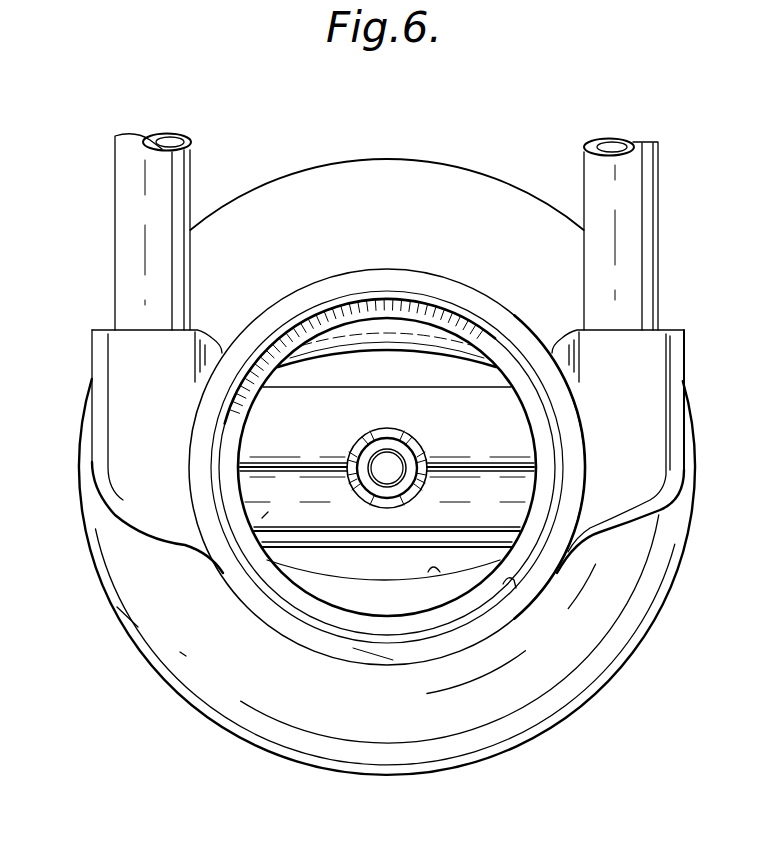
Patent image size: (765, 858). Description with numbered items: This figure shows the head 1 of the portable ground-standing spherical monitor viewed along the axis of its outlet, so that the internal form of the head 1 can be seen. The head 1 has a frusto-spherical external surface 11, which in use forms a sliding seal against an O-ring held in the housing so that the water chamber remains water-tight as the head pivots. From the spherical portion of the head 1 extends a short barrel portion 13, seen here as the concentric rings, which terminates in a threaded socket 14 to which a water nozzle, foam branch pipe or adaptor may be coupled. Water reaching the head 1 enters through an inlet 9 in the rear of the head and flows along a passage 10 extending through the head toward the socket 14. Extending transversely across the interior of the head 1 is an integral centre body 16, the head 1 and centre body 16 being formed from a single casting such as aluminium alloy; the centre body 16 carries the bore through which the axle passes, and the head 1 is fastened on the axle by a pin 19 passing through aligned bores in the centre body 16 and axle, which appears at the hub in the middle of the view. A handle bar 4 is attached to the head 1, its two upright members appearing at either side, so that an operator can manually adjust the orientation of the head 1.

The head 1 is at (455, 158).
The handle bar 4 is at (122, 205).
The inlet 9 is at (438, 572).
The passage 10 is at (405, 370).
The frusto-spherical external surface 11 is at (320, 162).
The barrel portion 13 is at (365, 277).
The threaded socket 14 is at (508, 590).
The centre body 16 is at (263, 518).
The pin 19 is at (370, 498).